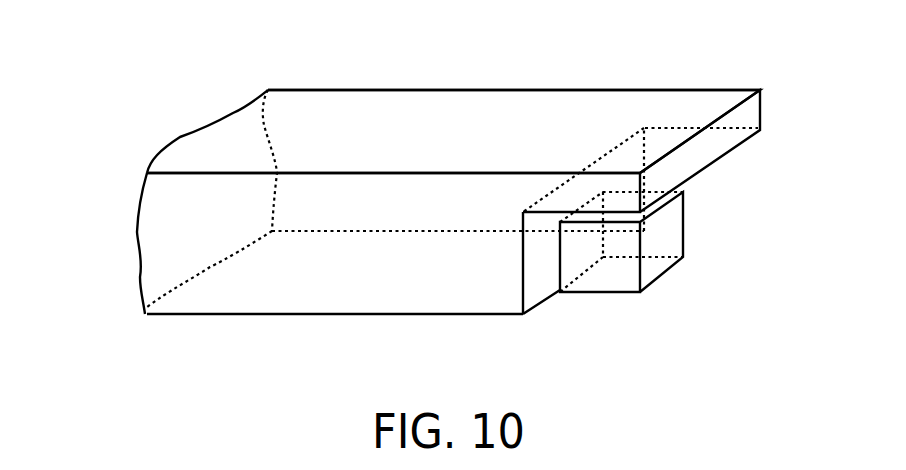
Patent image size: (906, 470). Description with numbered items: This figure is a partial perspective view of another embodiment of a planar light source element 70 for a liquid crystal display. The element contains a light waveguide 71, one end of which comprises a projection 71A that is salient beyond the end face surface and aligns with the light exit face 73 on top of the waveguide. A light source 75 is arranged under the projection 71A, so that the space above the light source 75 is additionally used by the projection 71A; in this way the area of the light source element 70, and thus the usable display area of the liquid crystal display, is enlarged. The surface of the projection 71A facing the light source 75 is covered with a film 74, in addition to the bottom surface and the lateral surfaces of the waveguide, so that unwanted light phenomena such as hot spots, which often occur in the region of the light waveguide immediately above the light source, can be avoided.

The light source element 70 is at (568, 41).
The light waveguide 71 is at (130, 167).
The projection 71A is at (708, 108).
The light exit face 73 is at (425, 118).
The film 74 is at (365, 278).
The light source 75 is at (670, 238).